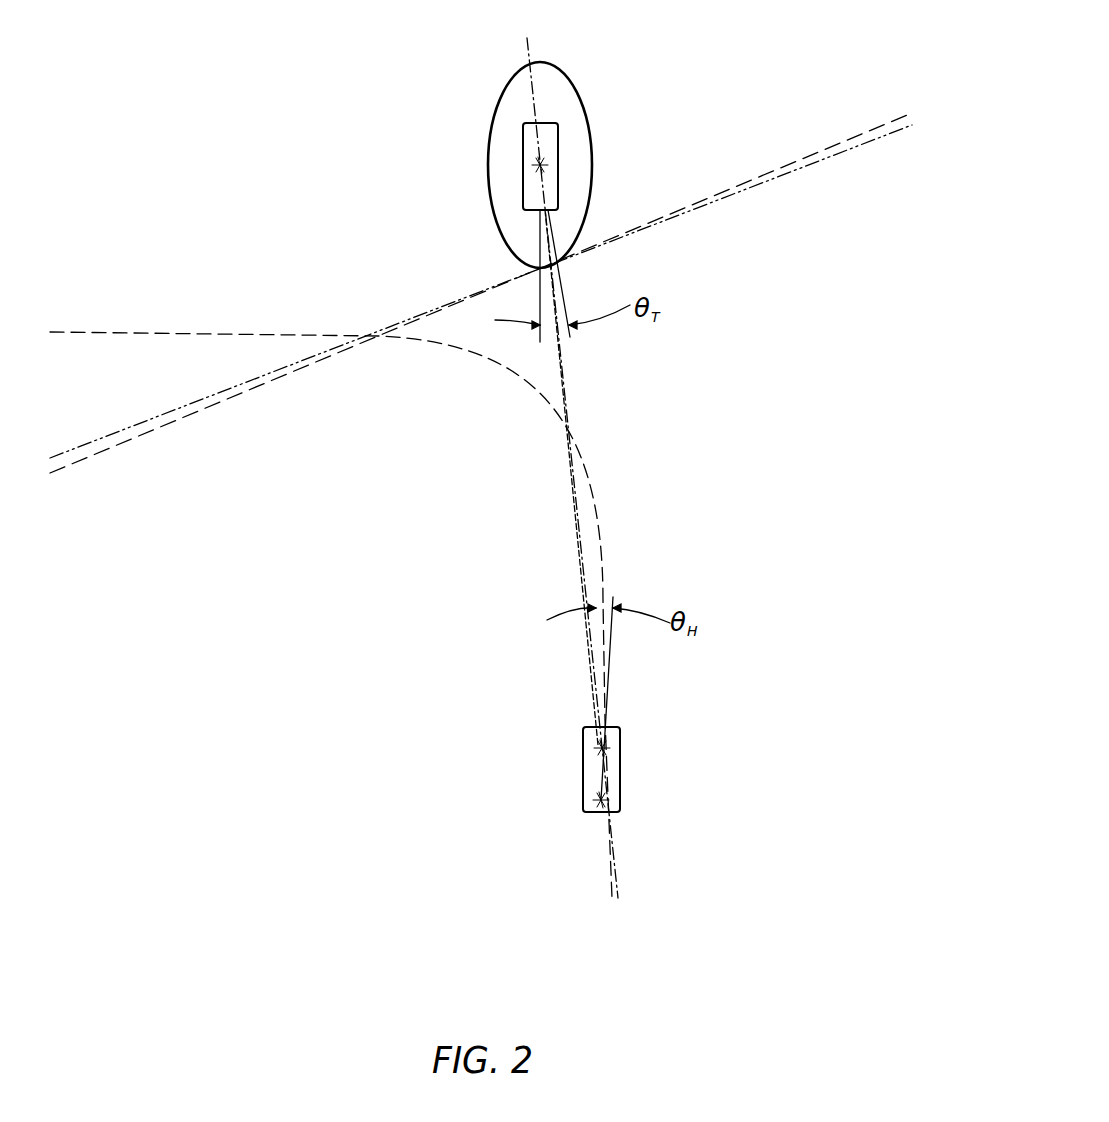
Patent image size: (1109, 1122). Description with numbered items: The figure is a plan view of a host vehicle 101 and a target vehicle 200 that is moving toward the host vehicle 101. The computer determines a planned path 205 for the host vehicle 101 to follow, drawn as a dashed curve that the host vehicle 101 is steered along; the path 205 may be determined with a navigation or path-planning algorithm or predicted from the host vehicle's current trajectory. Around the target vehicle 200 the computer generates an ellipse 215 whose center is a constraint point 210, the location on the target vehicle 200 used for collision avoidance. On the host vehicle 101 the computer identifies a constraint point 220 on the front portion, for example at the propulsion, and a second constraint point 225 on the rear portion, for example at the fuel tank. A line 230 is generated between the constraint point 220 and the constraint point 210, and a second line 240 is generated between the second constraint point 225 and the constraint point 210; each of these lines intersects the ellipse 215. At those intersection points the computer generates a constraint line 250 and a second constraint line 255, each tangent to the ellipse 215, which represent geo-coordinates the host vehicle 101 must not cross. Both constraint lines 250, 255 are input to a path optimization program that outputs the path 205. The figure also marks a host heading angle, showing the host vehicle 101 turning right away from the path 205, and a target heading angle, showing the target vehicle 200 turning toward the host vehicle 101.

The host vehicle 101 is at (582, 753).
The target vehicle 200 is at (548, 123).
The planned path 205 is at (603, 572).
The constraint point 210 is at (545, 165).
The ellipse 215 is at (497, 95).
The constraint point 220 is at (603, 740).
The second constraint point 225 is at (607, 805).
The line 230 is at (588, 667).
The second line 240 is at (580, 577).
The constraint line 250 is at (838, 148).
The second constraint line 255 is at (765, 183).